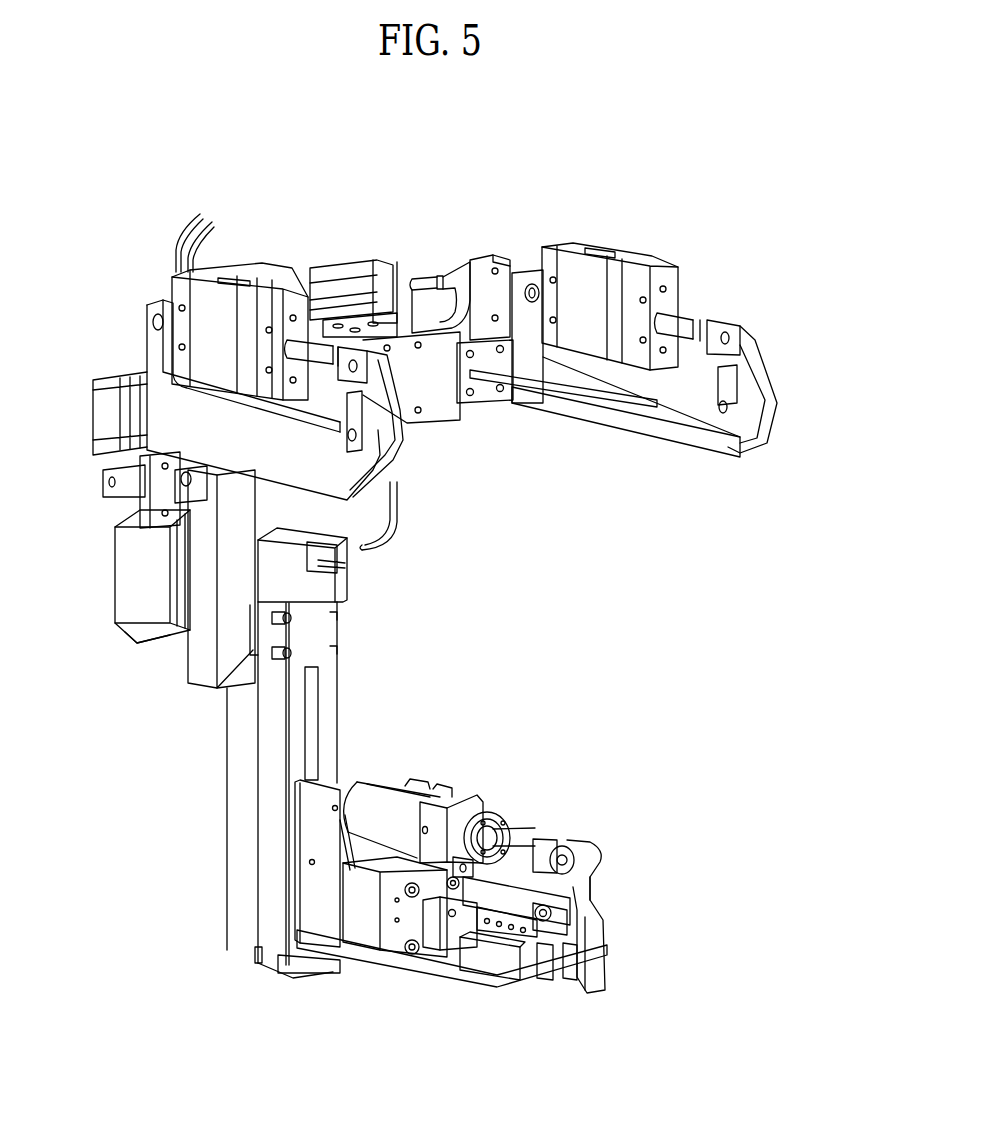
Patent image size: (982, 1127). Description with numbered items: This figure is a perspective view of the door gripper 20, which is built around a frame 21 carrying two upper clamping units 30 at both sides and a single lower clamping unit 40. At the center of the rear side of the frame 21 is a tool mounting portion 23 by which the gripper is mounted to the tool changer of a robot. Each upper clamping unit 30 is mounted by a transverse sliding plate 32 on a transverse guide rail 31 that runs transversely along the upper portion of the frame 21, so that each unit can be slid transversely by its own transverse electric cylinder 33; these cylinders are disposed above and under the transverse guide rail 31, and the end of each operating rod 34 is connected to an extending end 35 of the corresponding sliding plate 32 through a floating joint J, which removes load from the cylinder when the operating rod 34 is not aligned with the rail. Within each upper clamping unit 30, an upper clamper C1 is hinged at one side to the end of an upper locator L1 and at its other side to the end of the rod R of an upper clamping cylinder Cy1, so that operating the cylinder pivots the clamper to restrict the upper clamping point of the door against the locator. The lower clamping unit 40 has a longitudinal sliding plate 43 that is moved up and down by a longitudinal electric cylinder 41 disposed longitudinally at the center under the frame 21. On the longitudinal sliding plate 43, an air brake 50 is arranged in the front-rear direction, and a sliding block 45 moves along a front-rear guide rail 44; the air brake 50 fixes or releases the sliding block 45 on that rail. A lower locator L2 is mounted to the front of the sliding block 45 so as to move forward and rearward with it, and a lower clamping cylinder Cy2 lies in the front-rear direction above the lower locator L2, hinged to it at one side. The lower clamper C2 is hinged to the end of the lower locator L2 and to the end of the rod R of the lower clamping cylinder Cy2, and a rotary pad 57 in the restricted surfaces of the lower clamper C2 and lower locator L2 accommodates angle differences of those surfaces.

The door gripper 20 is at (578, 595).
The frame 21 is at (197, 668).
The tool mounting portion 23 is at (122, 572).
The upper clamping unit 30 is at (160, 238).
The transverse guide rail 31 is at (322, 315).
The transverse sliding plate 32 is at (180, 462).
The transverse electric cylinder 33 is at (292, 322).
The operating rod 34 is at (420, 280).
The extending end 35 is at (495, 260).
The lower clamping unit 40 is at (548, 757).
The longitudinal electric cylinder 41 is at (330, 633).
The longitudinal sliding plate 43 is at (352, 947).
The front-rear guide rail 44 is at (521, 977).
The sliding block 45 is at (432, 943).
The air brake 50 is at (393, 940).
The rotary pad 57 is at (572, 977).
The upper clamping cylinder Cy1 is at (212, 298).
The lower clamping cylinder Cy2 is at (392, 790).
The rod R is at (298, 308).
The floating joint J is at (458, 265).
The upper locator L1 is at (157, 412).
The lower locator L2 is at (520, 897).
The upper clamper C1 is at (402, 437).
The lower clamper C2 is at (600, 912).